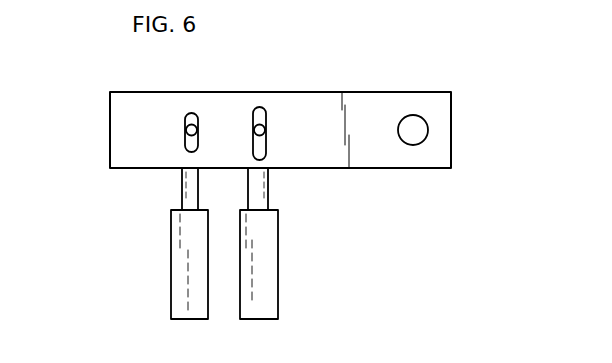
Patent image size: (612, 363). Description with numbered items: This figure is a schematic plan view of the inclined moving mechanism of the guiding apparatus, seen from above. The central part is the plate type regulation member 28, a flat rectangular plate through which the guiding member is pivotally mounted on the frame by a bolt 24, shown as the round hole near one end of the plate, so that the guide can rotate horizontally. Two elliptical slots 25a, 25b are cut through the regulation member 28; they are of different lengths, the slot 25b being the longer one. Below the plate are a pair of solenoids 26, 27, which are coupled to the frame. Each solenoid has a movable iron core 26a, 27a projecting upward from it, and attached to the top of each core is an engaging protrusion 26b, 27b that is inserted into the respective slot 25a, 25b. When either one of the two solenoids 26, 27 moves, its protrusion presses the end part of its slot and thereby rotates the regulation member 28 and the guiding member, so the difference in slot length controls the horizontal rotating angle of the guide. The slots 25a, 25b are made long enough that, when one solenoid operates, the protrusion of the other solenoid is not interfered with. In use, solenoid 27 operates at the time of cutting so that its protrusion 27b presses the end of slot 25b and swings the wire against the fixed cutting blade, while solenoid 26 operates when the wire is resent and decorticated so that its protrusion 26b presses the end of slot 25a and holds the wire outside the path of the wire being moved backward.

The plate type regulation member 28 is at (115, 114).
The bolt 24 is at (415, 145).
The elliptical slot 25a is at (190, 112).
The elliptical slot 25b is at (262, 108).
The solenoid 26 is at (171, 265).
The movable iron core 26a is at (182, 182).
The engaging protrusion 26b is at (185, 131).
The solenoid 27 is at (270, 262).
The movable iron core 27a is at (266, 190).
The engaging protrusion 27b is at (266, 130).